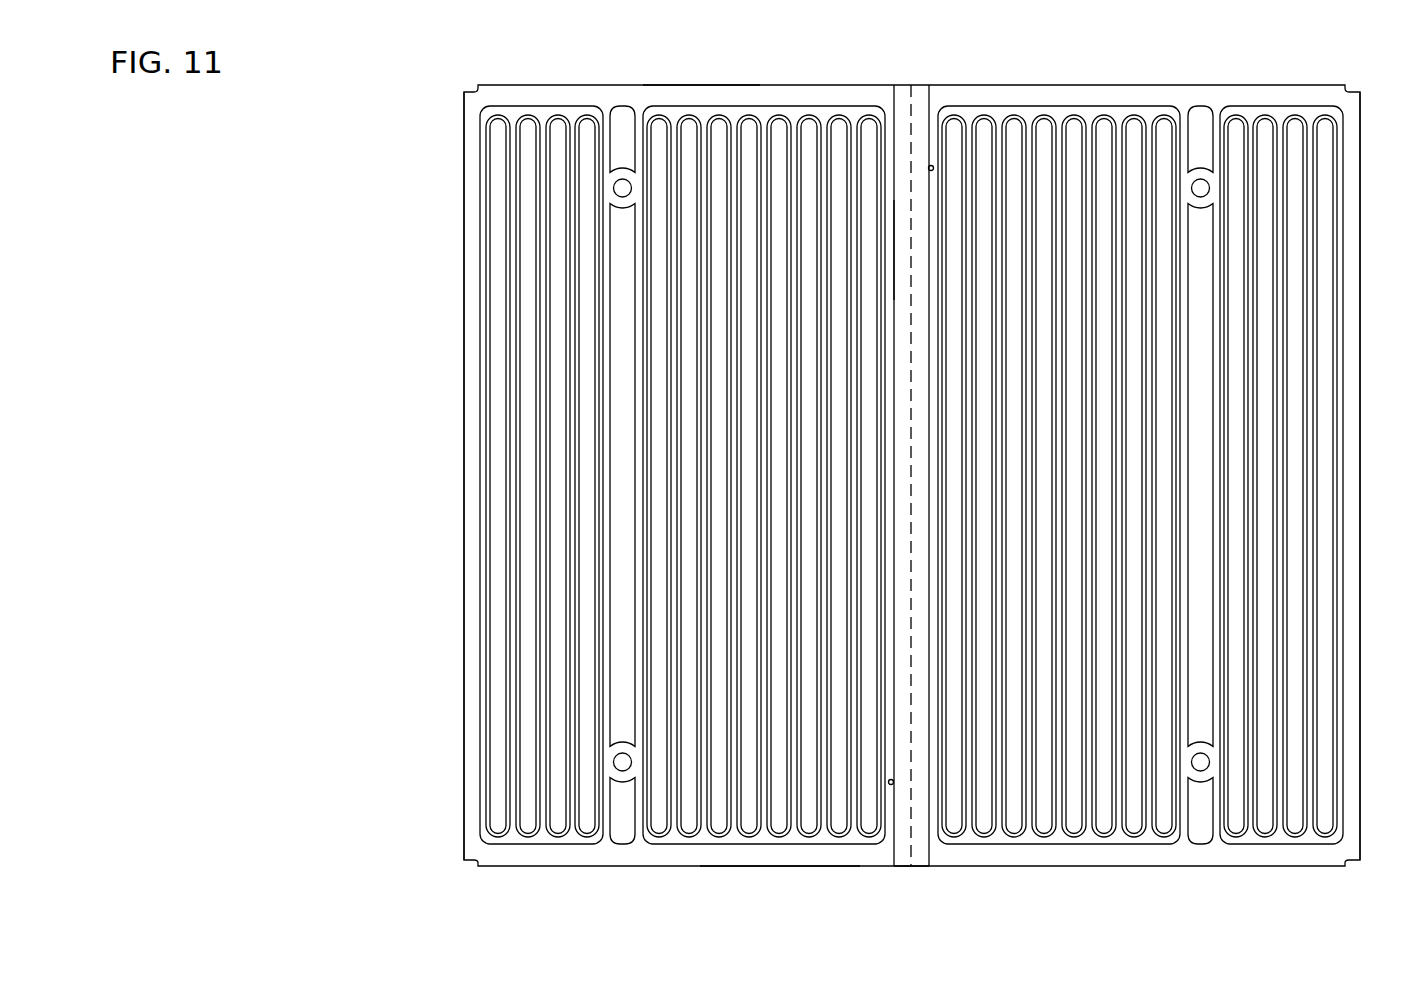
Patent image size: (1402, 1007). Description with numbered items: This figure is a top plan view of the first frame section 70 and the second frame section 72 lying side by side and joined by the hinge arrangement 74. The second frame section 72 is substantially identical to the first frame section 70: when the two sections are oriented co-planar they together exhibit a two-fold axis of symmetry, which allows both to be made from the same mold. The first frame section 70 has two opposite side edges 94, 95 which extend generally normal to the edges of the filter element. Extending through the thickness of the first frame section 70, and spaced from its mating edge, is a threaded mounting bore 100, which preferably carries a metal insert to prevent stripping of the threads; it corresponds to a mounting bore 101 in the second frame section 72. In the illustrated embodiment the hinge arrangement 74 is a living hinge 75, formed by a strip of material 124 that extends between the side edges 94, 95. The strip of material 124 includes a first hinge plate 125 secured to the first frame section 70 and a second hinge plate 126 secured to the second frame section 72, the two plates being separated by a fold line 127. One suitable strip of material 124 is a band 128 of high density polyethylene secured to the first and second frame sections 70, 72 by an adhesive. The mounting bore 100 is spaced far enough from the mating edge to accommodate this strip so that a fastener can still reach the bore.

The first frame section 70 is at (586, 80).
The second frame section 72 is at (1095, 72).
The hinge arrangement 74 is at (893, 75).
The living hinge 75 is at (913, 866).
The side edge 94 is at (700, 87).
The side edge 95 is at (789, 866).
The threaded mounting bore 100 is at (891, 785).
The mounting bore 101 is at (931, 165).
The strip of material 124 is at (902, 98).
The first hinge plate 125 is at (900, 866).
The second hinge plate 126 is at (923, 92).
The fold line 127 is at (912, 837).
The band 128 is at (903, 240).